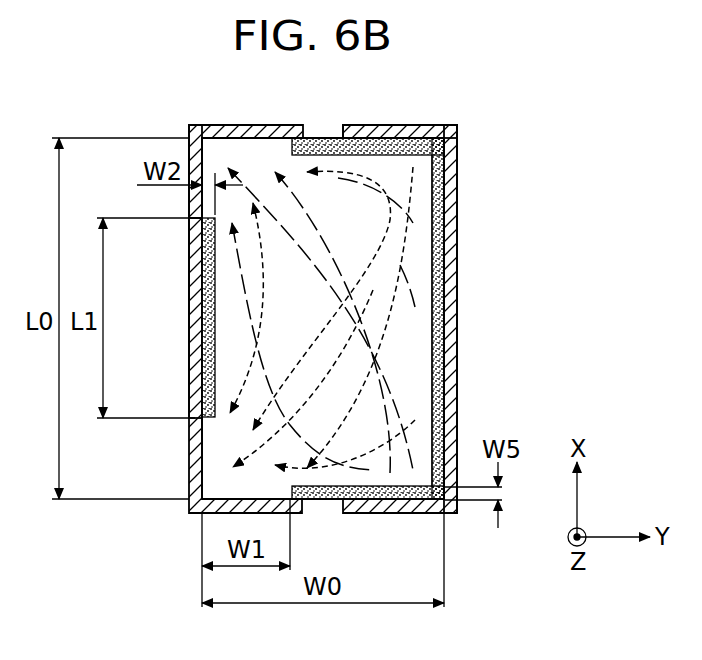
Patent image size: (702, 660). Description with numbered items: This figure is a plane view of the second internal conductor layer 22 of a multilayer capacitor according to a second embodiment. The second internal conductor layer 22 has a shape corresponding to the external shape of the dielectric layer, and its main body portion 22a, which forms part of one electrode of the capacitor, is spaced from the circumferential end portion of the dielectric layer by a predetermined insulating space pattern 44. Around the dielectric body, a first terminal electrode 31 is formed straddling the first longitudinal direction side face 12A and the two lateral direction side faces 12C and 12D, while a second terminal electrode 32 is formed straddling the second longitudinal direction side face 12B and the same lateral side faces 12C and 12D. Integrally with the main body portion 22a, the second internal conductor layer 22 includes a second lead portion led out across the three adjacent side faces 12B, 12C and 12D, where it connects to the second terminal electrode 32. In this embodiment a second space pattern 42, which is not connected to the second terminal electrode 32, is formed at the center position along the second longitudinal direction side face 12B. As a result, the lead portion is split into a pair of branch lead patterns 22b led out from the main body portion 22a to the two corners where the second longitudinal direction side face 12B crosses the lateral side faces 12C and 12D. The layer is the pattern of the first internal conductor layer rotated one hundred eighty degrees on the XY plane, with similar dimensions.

The first longitudinal direction side face 12A is at (445, 377).
The second longitudinal direction side face 12B is at (197, 280).
The third lateral direction side face 12C is at (322, 503).
The fourth lateral direction side face 12D is at (327, 138).
The second internal conductor layer 22 is at (410, 258).
The main body portion 22a is at (396, 320).
The branch lead patterns 22b is at (230, 153).
The first terminal electrode 31 is at (452, 275).
The second terminal electrode 32 is at (195, 202).
The second space pattern 42 is at (205, 358).
The insulating space pattern 44 is at (410, 133).